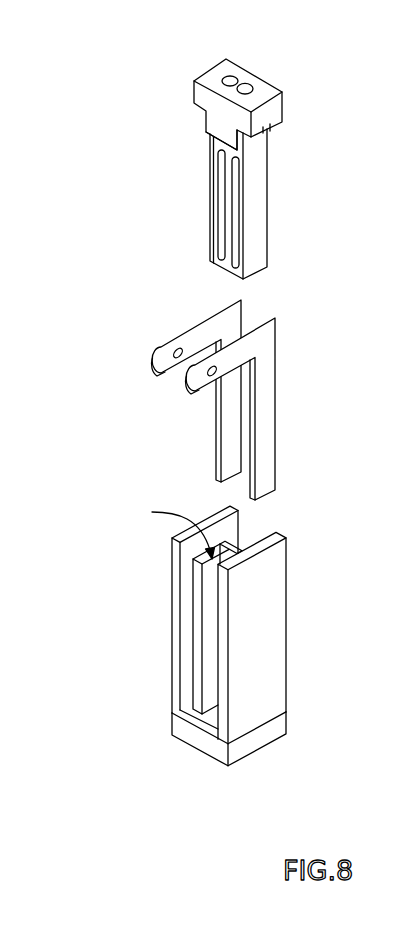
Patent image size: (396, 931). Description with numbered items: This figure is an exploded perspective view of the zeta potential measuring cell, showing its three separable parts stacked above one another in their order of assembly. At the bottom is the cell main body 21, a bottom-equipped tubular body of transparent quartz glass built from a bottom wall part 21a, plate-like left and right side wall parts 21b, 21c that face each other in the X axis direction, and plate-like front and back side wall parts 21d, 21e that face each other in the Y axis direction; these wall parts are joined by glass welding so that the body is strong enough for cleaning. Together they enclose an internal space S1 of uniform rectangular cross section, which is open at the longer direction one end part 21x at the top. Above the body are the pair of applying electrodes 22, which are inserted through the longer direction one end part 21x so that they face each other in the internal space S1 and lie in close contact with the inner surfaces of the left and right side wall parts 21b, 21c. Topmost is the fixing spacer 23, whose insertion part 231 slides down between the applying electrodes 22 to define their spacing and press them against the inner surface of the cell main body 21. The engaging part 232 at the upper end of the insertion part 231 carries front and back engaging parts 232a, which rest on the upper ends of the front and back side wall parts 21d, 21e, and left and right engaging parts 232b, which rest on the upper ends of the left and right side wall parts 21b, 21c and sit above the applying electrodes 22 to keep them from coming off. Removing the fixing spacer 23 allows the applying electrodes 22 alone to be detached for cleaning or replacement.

The cell main body 21 is at (222, 643).
The bottom wall part 21a is at (285, 723).
The left side wall part 21b is at (172, 585).
The right side wall part 21c is at (257, 612).
The front side wall part 21d is at (203, 688).
The back side wall part 21e is at (242, 534).
The longer direction one end part 21x is at (204, 641).
The applying electrodes 22 is at (156, 352).
The fixing spacer 23 is at (240, 158).
The insertion part 231 is at (267, 203).
The engaging part 232 is at (241, 102).
The front and back engaging parts 232a is at (208, 138).
The left and right engaging parts 232b is at (282, 124).
The internal space S1 is at (165, 562).